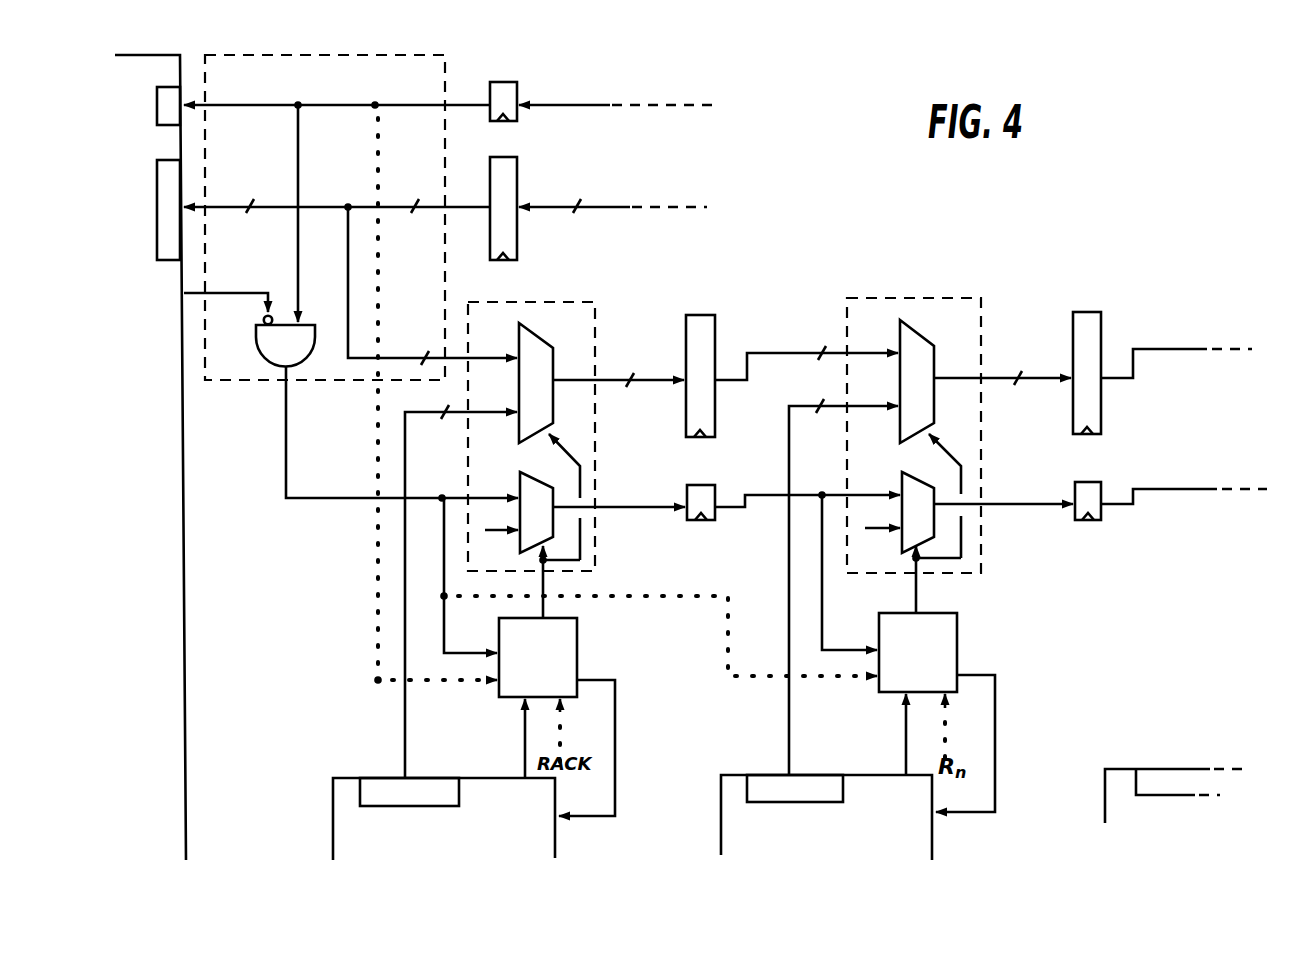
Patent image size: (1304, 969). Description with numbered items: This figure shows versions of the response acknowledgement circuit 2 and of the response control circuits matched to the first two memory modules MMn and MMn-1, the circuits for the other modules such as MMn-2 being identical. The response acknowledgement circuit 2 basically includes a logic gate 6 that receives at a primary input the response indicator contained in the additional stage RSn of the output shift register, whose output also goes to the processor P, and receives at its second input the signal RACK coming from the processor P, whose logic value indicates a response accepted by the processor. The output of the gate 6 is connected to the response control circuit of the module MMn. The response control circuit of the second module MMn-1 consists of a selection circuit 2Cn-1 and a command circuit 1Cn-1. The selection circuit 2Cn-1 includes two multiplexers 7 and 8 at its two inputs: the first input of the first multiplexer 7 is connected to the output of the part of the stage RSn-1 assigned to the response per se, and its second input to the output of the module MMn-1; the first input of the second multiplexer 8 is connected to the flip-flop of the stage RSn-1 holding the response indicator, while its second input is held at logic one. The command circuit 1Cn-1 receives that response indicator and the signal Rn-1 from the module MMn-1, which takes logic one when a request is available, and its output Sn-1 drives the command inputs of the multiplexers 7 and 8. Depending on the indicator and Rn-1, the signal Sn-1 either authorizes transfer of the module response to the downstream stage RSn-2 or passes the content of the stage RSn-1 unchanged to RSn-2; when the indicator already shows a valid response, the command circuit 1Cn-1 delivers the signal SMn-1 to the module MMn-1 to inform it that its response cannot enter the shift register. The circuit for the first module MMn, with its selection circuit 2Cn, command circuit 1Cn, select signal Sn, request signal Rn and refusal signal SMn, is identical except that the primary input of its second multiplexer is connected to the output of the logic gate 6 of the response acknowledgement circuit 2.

The response acknowledgement circuit 2 is at (414, 56).
The logic gate 6 is at (306, 350).
The first multiplexer 7 is at (936, 347).
The second multiplexer 8 is at (901, 477).
The processor P is at (186, 598).
The response accepted signal RACK is at (229, 294).
The additional stage of the output shift register RSn is at (507, 127).
The stage of the output shift register RSn-1 is at (702, 443).
The downstream register stage RSn-2 is at (1090, 480).
The selection circuit 2Cn is at (536, 302).
The selection circuit 2Cn-1 is at (914, 415).
The command circuit 1Cn is at (581, 663).
The command circuit 1Cn-1 is at (958, 663).
The output of the command circuit Sn is at (545, 606).
The output of the command circuit Sn-1 is at (920, 600).
The request available signal Rn is at (465, 591).
The request available signal Rn-1 is at (847, 587).
The response refused signal SMn is at (616, 786).
The response refused signal SMn-1 is at (996, 770).
The first memory module MMn is at (333, 836).
The second memory module MMn-1 is at (721, 812).
The memory module MMn-2 is at (1105, 806).